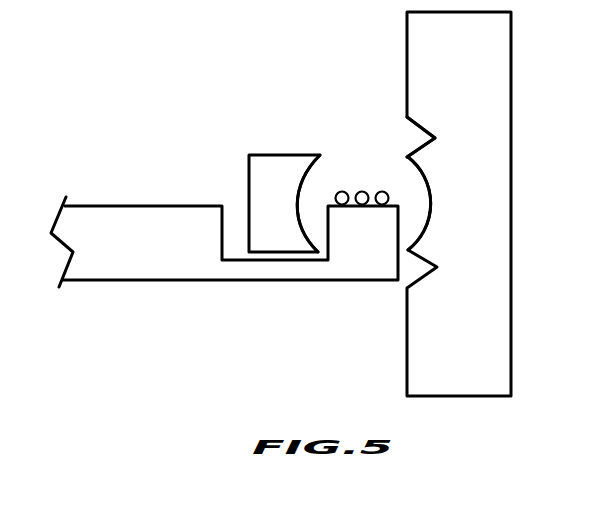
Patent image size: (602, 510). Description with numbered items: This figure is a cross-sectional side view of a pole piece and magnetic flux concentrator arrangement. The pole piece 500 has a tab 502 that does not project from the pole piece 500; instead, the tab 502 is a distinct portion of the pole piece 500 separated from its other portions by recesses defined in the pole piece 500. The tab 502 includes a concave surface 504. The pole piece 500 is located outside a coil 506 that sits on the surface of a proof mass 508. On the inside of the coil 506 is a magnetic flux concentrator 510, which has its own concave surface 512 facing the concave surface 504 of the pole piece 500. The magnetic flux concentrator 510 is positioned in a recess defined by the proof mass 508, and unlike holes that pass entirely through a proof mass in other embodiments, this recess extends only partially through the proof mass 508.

The pole piece 500 is at (511, 117).
The tab 502 is at (417, 148).
The concave surface 504 is at (418, 177).
The coil 506 is at (348, 176).
The proof mass 508 is at (360, 280).
The magnetic flux concentrator 510 is at (260, 155).
The concave surface 512 is at (314, 173).